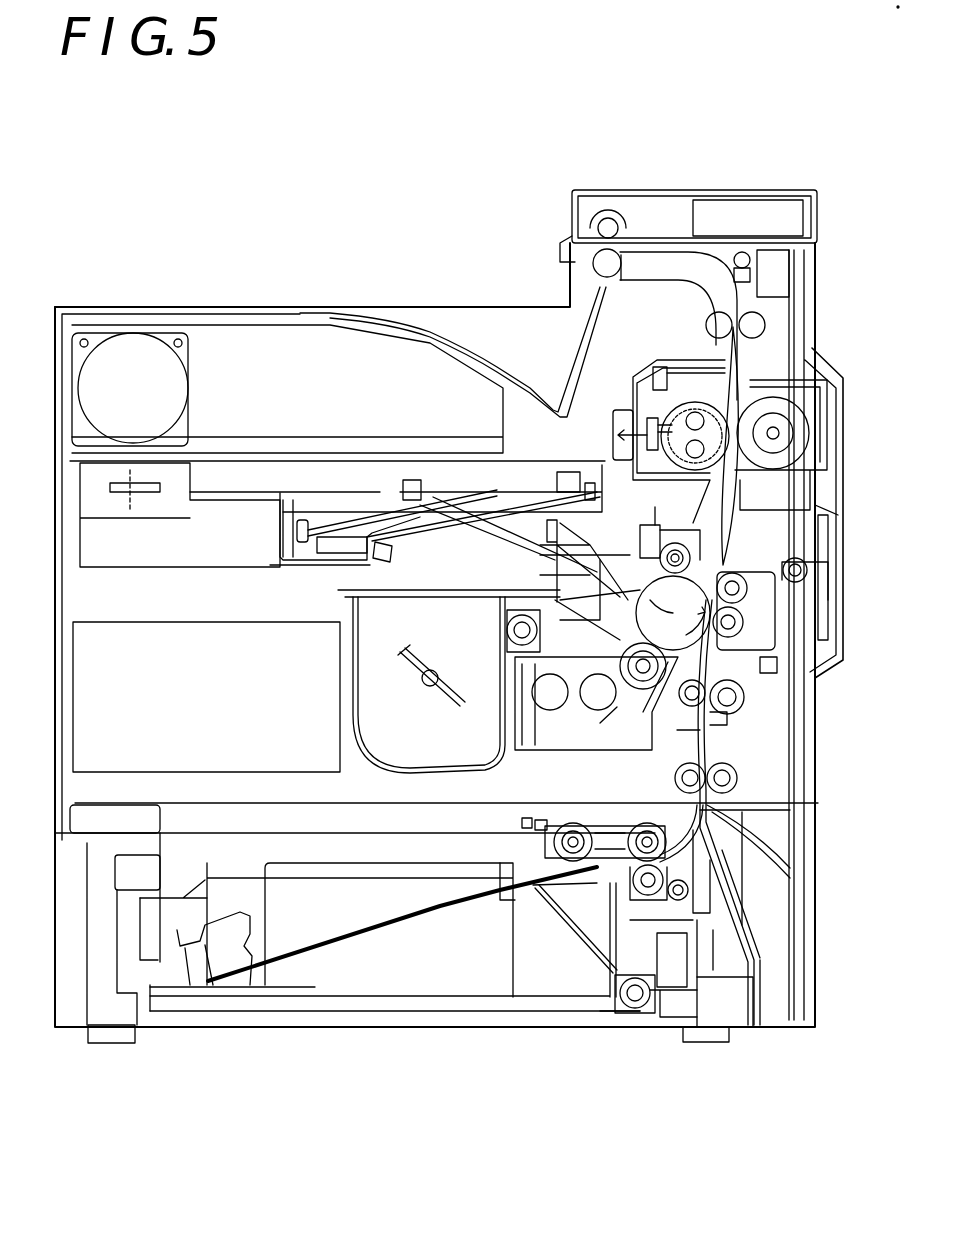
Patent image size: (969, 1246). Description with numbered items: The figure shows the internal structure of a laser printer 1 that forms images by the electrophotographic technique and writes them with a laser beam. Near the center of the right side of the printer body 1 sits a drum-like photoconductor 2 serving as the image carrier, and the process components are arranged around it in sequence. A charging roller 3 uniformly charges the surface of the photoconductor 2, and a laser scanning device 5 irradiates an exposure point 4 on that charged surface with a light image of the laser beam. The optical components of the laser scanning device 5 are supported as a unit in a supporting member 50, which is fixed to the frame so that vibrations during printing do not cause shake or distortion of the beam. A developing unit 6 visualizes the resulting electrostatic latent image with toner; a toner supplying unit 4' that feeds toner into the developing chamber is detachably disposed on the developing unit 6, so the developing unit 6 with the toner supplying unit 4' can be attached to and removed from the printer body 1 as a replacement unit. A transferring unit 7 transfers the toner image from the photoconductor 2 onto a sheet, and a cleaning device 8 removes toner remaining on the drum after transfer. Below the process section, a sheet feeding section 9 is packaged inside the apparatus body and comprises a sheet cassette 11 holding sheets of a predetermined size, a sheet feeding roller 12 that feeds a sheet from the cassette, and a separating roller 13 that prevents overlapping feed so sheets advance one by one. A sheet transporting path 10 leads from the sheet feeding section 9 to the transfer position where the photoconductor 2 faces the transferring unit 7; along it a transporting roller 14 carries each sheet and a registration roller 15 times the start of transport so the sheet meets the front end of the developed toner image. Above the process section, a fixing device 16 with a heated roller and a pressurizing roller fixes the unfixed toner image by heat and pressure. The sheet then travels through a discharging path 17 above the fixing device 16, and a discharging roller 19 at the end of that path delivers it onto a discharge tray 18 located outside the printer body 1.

The laser printer 1 is at (73, 307).
The photoconductor 2 is at (633, 562).
The charging roller 3 is at (625, 590).
The exposure point 4 is at (673, 613).
The toner supplying unit 4' is at (449, 698).
The laser scanning device 5 is at (272, 567).
The developing unit 6 is at (615, 722).
The transferring unit 7 is at (750, 655).
The cleaning device 8 is at (665, 528).
The sheet feeding section 9 is at (706, 953).
The sheet transporting path 10 is at (715, 745).
The sheet cassette 11 is at (432, 997).
The sheet feeding roller 12 is at (563, 824).
The separating roller 13 is at (648, 822).
The transporting roller 14 is at (590, 805).
The registration roller 15 is at (745, 708).
The fixing device 16 is at (785, 398).
The discharging path 17 is at (700, 290).
The discharge tray 18 is at (432, 332).
The discharging roller 19 is at (597, 193).
The supporting member 50 is at (165, 567).